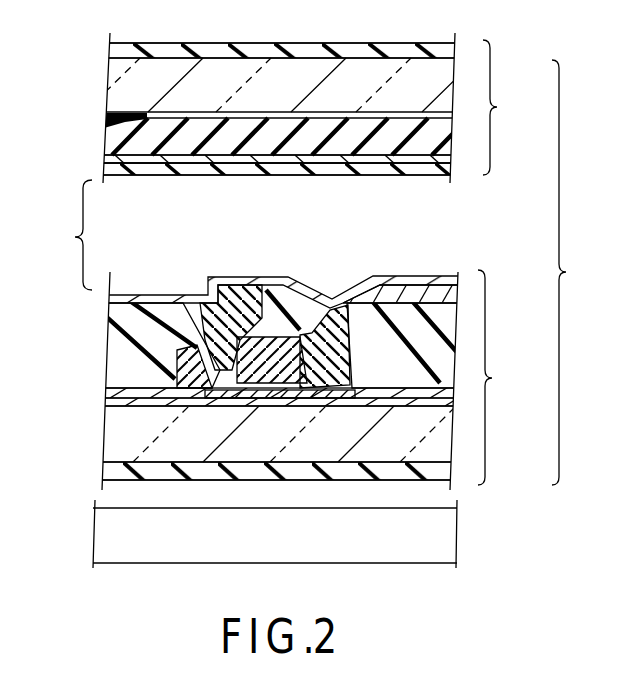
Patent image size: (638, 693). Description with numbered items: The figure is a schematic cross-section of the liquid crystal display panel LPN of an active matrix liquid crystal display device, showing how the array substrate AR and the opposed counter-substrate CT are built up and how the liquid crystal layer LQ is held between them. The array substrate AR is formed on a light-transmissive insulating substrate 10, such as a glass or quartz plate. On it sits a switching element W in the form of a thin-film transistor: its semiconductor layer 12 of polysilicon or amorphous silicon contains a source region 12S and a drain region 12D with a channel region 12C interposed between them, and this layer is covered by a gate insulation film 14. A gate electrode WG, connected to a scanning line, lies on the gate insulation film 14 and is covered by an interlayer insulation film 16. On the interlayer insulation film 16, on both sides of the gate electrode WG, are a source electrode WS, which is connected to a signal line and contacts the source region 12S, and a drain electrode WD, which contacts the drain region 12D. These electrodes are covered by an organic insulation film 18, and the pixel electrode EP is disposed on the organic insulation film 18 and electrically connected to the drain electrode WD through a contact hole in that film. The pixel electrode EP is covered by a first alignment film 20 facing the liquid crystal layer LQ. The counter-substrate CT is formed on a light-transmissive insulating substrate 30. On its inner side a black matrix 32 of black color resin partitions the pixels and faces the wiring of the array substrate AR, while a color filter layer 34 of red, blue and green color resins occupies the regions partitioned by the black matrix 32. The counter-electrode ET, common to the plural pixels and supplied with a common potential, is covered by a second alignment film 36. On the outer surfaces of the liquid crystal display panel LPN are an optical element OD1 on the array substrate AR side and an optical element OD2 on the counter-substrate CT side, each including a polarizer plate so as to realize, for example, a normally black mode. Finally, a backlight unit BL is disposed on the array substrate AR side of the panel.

The optical element OD2 is at (110, 52).
The insulating substrate 30 is at (110, 83).
The black matrix 32 is at (110, 118).
The color filter layer 34 is at (110, 145).
The second alignment film 36 is at (110, 172).
The counter-electrode ET is at (181, 166).
The counter-substrate CT is at (511, 107).
The liquid crystal display panel LPN is at (588, 272).
The liquid crystal layer LQ is at (65, 235).
The first alignment film 20 is at (153, 293).
The pixel electrode EP is at (402, 292).
The organic insulation film 18 is at (105, 334).
The source electrode WS is at (223, 318).
The gate electrode WG is at (277, 345).
The drain electrode WD is at (330, 322).
The interlayer insulation film 16 is at (108, 389).
The gate insulation film 14 is at (108, 404).
The semiconductor layer 12 is at (298, 408).
The source region 12S is at (216, 405).
The channel region 12C is at (270, 408).
The drain region 12D is at (340, 407).
The insulating substrate 10 is at (110, 431).
The switching element W is at (314, 436).
The optical element OD1 is at (108, 471).
The array substrate AR is at (508, 377).
The backlight unit BL is at (440, 537).